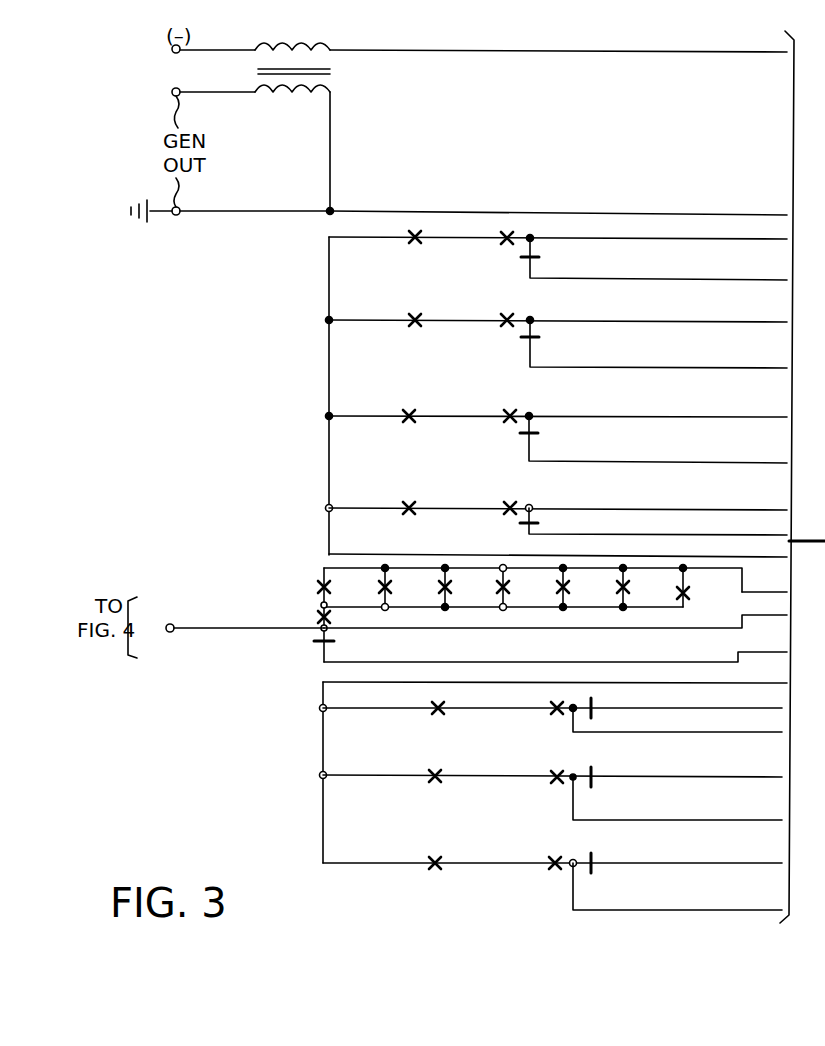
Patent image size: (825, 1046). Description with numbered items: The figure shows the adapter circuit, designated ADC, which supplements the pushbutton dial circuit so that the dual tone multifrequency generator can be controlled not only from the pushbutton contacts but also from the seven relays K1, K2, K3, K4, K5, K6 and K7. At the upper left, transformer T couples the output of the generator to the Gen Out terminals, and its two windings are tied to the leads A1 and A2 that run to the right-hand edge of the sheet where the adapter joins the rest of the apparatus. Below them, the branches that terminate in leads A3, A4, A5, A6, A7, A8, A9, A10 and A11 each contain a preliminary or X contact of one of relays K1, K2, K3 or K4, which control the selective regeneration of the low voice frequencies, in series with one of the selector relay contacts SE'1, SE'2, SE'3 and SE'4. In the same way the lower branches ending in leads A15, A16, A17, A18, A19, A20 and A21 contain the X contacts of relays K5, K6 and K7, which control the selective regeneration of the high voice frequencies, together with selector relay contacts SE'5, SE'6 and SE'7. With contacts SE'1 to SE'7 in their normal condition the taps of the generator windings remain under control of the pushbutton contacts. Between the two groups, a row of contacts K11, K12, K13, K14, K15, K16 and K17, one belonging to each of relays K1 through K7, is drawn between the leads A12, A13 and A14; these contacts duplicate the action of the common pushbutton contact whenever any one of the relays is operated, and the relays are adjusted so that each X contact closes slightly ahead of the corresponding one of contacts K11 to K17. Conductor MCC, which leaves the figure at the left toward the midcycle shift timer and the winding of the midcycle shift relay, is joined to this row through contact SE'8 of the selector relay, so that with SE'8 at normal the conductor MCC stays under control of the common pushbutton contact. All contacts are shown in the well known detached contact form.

The transformer T is at (333, 71).
The terminal A1 is at (486, 40).
The terminal A2 is at (484, 203).
The terminal A3 is at (559, 227).
The terminal A4 is at (659, 259).
The terminal A5 is at (559, 310).
The terminal A6 is at (659, 344).
The terminal A7 is at (559, 405).
The terminal A8 is at (659, 439).
The terminal A9 is at (559, 498).
The terminal A10 is at (659, 521).
The terminal A11 is at (561, 545).
The terminal A12 is at (767, 581).
The terminal A13 is at (559, 609).
The terminal A14 is at (557, 645).
The terminal A15 is at (556, 671).
The terminal A16 is at (556, 697).
The terminal A17 is at (681, 720).
The terminal A18 is at (556, 765).
The terminal A19 is at (681, 798).
The terminal A20 is at (554, 851).
The terminal A21 is at (679, 886).
The relay K1 is at (413, 236).
The relay K2 is at (409, 313).
The relay K3 is at (405, 411).
The relay K4 is at (405, 504).
The relay K5 is at (430, 706).
The relay K6 is at (429, 770).
The relay K7 is at (432, 856).
The relay contact K11 is at (708, 592).
The relay contact K12 is at (647, 584).
The relay contact K13 is at (587, 584).
The relay contact K14 is at (526, 584).
The relay contact K15 is at (468, 584).
The relay contact K16 is at (410, 584).
The relay contact K17 is at (348, 584).
The selector relay contact SE'1 is at (500, 260).
The selector relay contact SE'2 is at (498, 341).
The selector relay contact SE'3 is at (498, 440).
The selector relay contact SE'4 is at (498, 530).
The selector relay contact SE'5 is at (615, 701).
The selector relay contact SE'6 is at (596, 764).
The selector relay contact SE'7 is at (598, 851).
The selector relay contact SE'8 is at (294, 621).
The conductor MCC is at (171, 624).
The automatic dimming circuit ADC is at (220, 765).